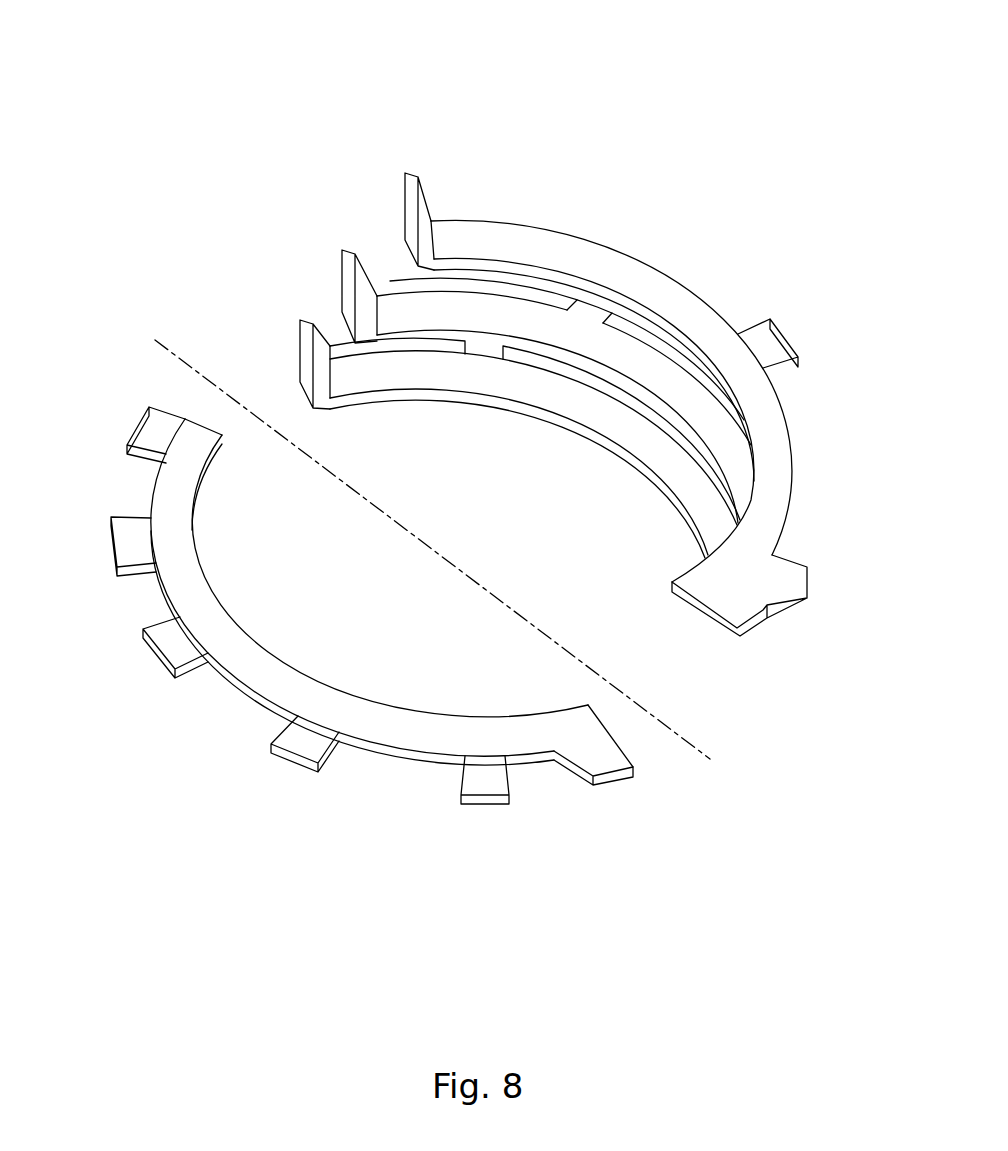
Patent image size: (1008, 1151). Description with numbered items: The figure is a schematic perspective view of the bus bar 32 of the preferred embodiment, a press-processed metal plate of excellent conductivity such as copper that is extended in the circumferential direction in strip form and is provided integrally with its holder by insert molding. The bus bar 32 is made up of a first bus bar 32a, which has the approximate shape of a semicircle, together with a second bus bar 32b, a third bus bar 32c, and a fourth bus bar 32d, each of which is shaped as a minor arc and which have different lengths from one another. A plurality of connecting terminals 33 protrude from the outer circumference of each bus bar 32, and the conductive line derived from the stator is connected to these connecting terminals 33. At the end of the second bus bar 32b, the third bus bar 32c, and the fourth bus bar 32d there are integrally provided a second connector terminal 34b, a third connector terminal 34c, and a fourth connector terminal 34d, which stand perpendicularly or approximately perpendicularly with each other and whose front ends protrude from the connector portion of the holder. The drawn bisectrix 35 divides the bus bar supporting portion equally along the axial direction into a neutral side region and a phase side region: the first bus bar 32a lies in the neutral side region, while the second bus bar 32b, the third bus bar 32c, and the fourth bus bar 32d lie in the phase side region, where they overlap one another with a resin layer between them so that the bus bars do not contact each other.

The bus bar 32 is at (546, 74).
The first bus bar 32a is at (415, 738).
The second bus bar 32b is at (457, 375).
The third bus bar 32c is at (628, 355).
The fourth bus bar 32d is at (680, 302).
The connecting terminal 33 is at (178, 642).
The second connector terminal 34b is at (300, 372).
The third connector terminal 34c is at (348, 288).
The fourth connector terminal 34d is at (408, 198).
The bisectrix 35 is at (712, 762).